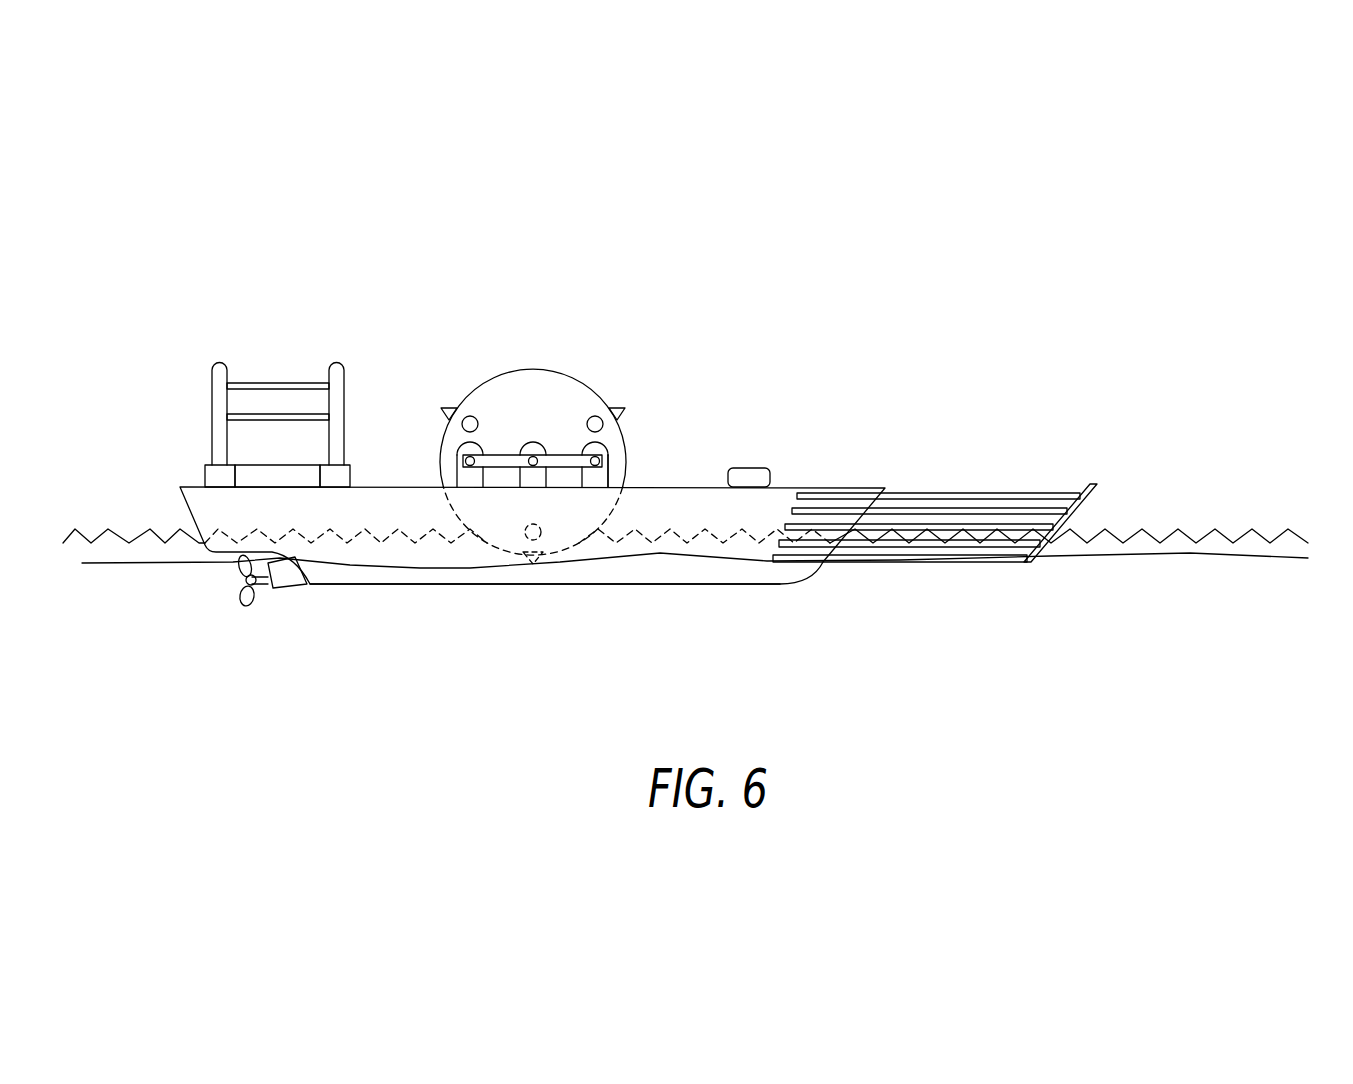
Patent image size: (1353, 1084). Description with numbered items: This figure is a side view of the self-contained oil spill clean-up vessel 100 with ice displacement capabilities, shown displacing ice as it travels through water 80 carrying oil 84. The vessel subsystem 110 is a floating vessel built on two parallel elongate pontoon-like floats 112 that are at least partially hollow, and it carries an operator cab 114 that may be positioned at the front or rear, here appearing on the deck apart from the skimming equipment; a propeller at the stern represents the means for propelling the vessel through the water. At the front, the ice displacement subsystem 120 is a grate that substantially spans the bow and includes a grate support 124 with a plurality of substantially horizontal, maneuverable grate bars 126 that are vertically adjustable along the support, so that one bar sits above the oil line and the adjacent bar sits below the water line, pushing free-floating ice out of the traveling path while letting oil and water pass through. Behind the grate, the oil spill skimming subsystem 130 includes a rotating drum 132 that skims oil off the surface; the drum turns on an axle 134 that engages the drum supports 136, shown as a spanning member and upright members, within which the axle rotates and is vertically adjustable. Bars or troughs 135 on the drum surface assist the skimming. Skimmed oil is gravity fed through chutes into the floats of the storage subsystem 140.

The self-contained oil spill clean-up vessel 100 is at (848, 278).
The vessel subsystem 110 is at (368, 652).
The pontoon-like floats 112 is at (345, 518).
The operator cab 114 is at (283, 378).
The ice displacement subsystem 120 is at (1127, 480).
The grate support 124 is at (1083, 488).
The grate bars 126 is at (900, 562).
The oil spill skimming subsystem 130 is at (578, 378).
The rotating drum 132 is at (477, 385).
The axle 134 is at (533, 457).
The bars or troughs 135 is at (445, 410).
The drum supports 136 is at (625, 466).
The storage subsystem 140 is at (663, 570).
The oil 84 is at (1290, 528).
The water 80 is at (1257, 556).